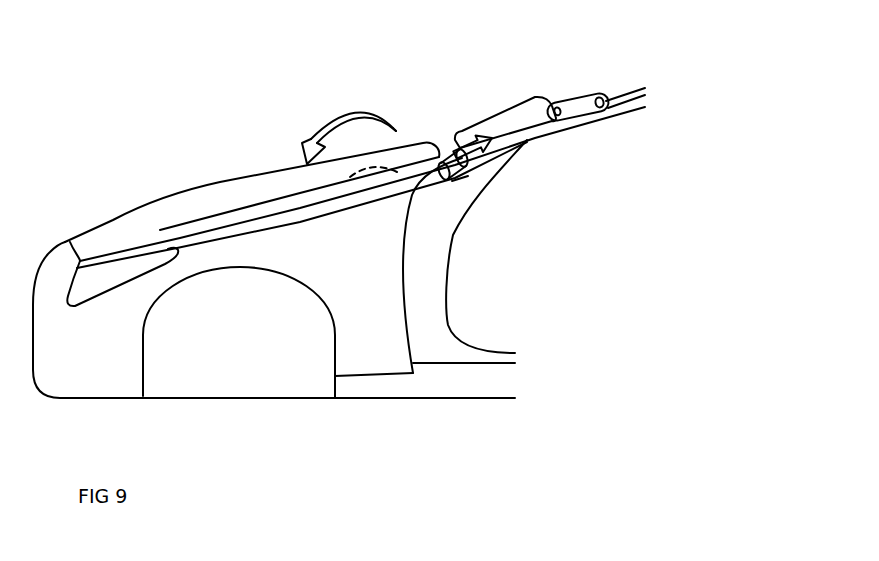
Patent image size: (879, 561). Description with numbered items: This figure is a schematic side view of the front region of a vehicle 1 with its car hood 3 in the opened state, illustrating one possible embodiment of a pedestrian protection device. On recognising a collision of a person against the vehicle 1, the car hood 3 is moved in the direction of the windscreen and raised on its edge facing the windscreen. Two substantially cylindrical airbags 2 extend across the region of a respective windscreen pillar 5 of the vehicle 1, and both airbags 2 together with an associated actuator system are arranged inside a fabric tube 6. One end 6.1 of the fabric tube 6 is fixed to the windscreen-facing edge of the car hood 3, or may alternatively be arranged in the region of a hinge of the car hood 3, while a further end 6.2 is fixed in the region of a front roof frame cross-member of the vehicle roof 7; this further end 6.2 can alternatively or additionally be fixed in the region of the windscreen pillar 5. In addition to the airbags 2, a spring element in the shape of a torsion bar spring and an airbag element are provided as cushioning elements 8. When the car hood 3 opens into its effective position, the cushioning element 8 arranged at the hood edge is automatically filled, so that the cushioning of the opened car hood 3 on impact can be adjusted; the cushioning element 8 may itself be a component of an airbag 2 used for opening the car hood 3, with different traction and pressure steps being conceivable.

The vehicle 1 is at (247, 100).
The airbag 2 is at (512, 132).
The car hood 3 is at (183, 192).
The windscreen pillar 5 is at (537, 138).
The fabric tube 6 is at (540, 99).
The end of the fabric tube 6.1 is at (455, 150).
The further end of the fabric tube 6.2 is at (583, 97).
The vehicle roof 7 is at (641, 88).
The cushioning element 8 is at (460, 180).